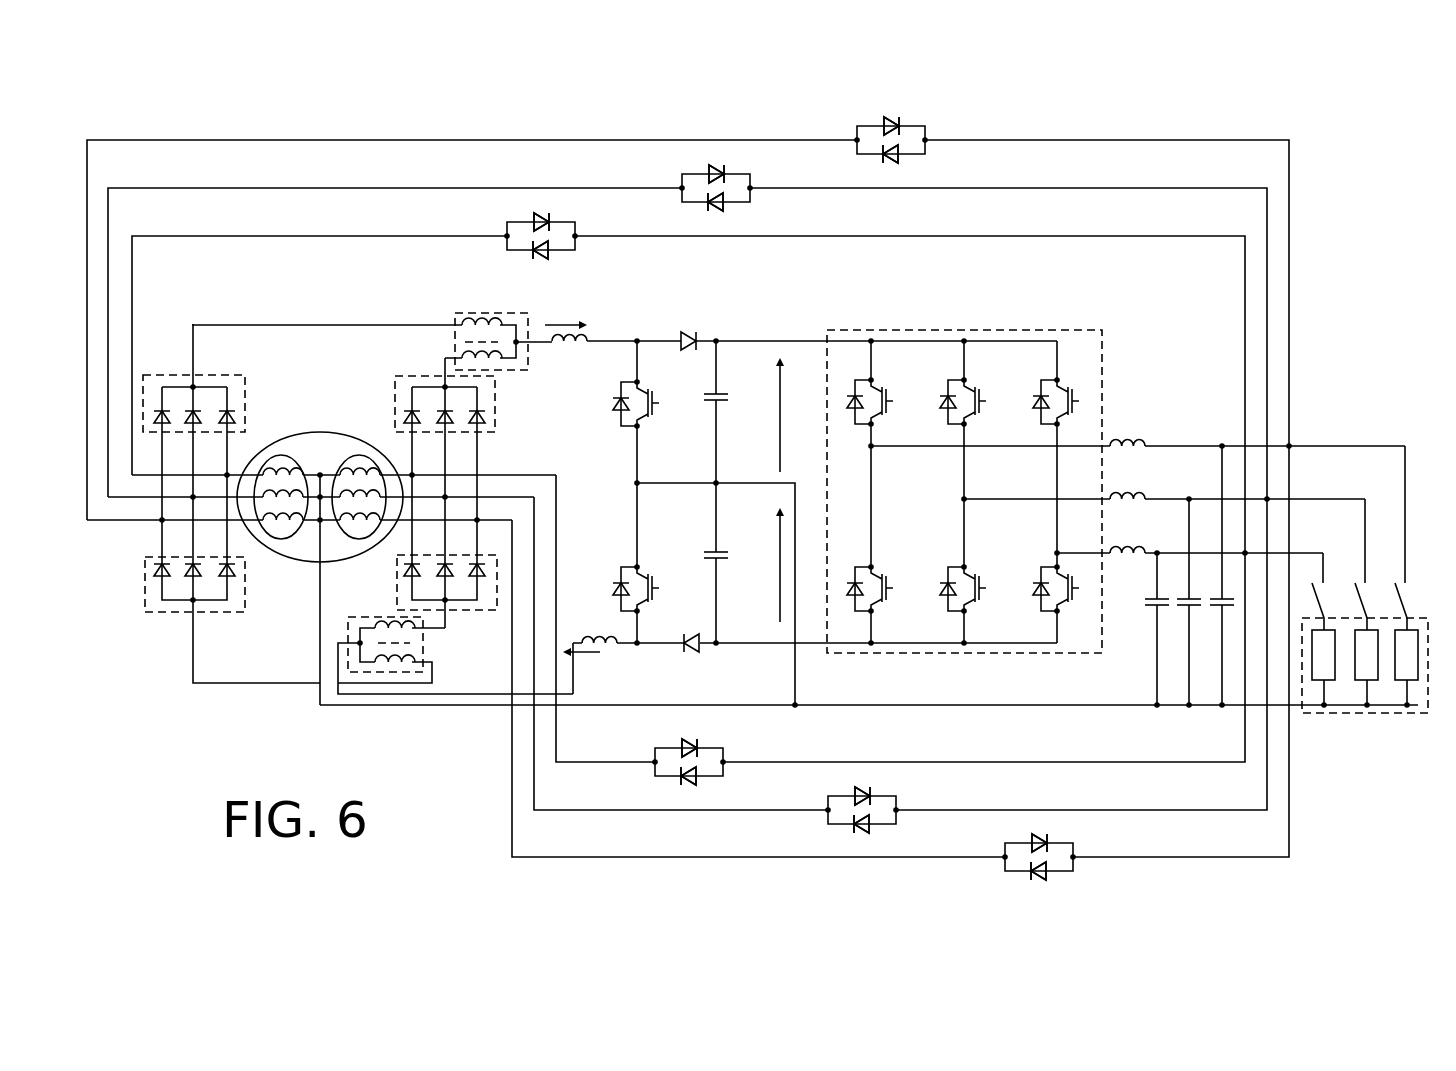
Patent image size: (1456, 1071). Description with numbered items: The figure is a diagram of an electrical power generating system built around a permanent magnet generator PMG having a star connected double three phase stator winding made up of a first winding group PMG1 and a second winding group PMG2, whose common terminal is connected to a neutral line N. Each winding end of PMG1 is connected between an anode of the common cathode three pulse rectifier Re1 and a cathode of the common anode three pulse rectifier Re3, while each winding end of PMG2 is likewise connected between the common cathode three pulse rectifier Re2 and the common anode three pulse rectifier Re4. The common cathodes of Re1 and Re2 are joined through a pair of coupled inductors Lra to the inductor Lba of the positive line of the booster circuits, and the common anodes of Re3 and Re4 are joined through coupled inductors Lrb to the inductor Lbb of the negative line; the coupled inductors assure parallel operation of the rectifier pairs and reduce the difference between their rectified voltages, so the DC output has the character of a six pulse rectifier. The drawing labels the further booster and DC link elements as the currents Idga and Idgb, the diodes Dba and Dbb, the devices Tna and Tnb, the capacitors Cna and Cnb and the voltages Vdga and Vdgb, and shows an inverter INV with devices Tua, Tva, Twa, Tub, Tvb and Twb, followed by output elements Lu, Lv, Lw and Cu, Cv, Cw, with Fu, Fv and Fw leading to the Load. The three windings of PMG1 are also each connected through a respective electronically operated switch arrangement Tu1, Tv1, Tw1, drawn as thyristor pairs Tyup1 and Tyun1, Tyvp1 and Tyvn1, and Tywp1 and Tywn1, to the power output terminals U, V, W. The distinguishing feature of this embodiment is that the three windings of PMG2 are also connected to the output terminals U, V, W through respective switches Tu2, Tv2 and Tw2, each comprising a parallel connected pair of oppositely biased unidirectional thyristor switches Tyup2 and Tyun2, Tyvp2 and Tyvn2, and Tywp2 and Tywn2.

The U-phase first thyristor switch Tu1 is at (689, 479).
The thyristor Tyup1 is at (862, 118).
The thyristor Tyun1 is at (919, 163).
The V-phase first thyristor switch Tv1 is at (689, 479).
The thyristor Tyvp1 is at (688, 165).
The thyristor Tyvn1 is at (744, 211).
The W-phase first thyristor switch Tw1 is at (690, 478).
The thyristor Tywp1 is at (510, 213).
The thyristor Tywn1 is at (571, 259).
The switch Tu2 is at (808, 711).
The thyristor Tyup2 is at (1011, 835).
The thyristor Tyun2 is at (1068, 882).
The switch Tv2 is at (730, 675).
The thyristor Tyvp2 is at (834, 788).
The thyristor Tyvn2 is at (890, 834).
The switch Tw2 is at (656, 641).
The thyristor Tywp2 is at (659, 739).
The thyristor Tywn2 is at (718, 787).
The permanent magnet generator PMG is at (321, 552).
The three phase stator winding PMG1 is at (282, 538).
The three phase stator winding PMG2 is at (363, 453).
The common cathode three pulse rectifier Re1 is at (201, 440).
The common cathode three pulse rectifier Re2 is at (436, 453).
The common anode three pulse rectifier Re3 is at (232, 620).
The common anode three pulse rectifier Re4 is at (425, 591).
The coupled inductors Lra is at (372, 354).
The coupled inductors Lrb is at (455, 655).
The inductor Lba is at (594, 350).
The inductor Lbb is at (605, 653).
The DC current Idga is at (567, 312).
The DC current Idgb is at (593, 664).
The diode Dba is at (845, 330).
The diode Dbb is at (847, 632).
The chopper transistor Tna is at (646, 413).
The chopper transistor Tnb is at (647, 564).
The DC capacitor Cna is at (703, 413).
The DC capacitor Cnb is at (704, 564).
The DC voltage Vdga is at (756, 416).
The DC voltage Vdgb is at (756, 566).
The neutral line N is at (869, 582).
The inverter INV is at (964, 479).
The inverter transistor Tua is at (877, 452).
The inverter transistor Tva is at (971, 452).
The inverter transistor Twa is at (1063, 454).
The inverter transistor Tub is at (863, 593).
The inverter transistor Tvb is at (956, 593).
The inverter transistor Twb is at (1049, 591).
The filter reactor Lu is at (1138, 431).
The filter reactor Lv is at (1164, 485).
The filter reactor Lw is at (1190, 539).
The power output terminal U is at (1354, 501).
The power output terminal V is at (1334, 529).
The power output terminal W is at (1313, 555).
The filter capacitor Cu is at (1214, 575).
The filter capacitor Cv is at (1179, 602).
The filter capacitor Cw is at (1147, 629).
The load fuse/switch Fu is at (1414, 645).
The load fuse/switch Fv is at (1373, 645).
The load fuse/switch Fw is at (1332, 645).
The load Load is at (1367, 667).